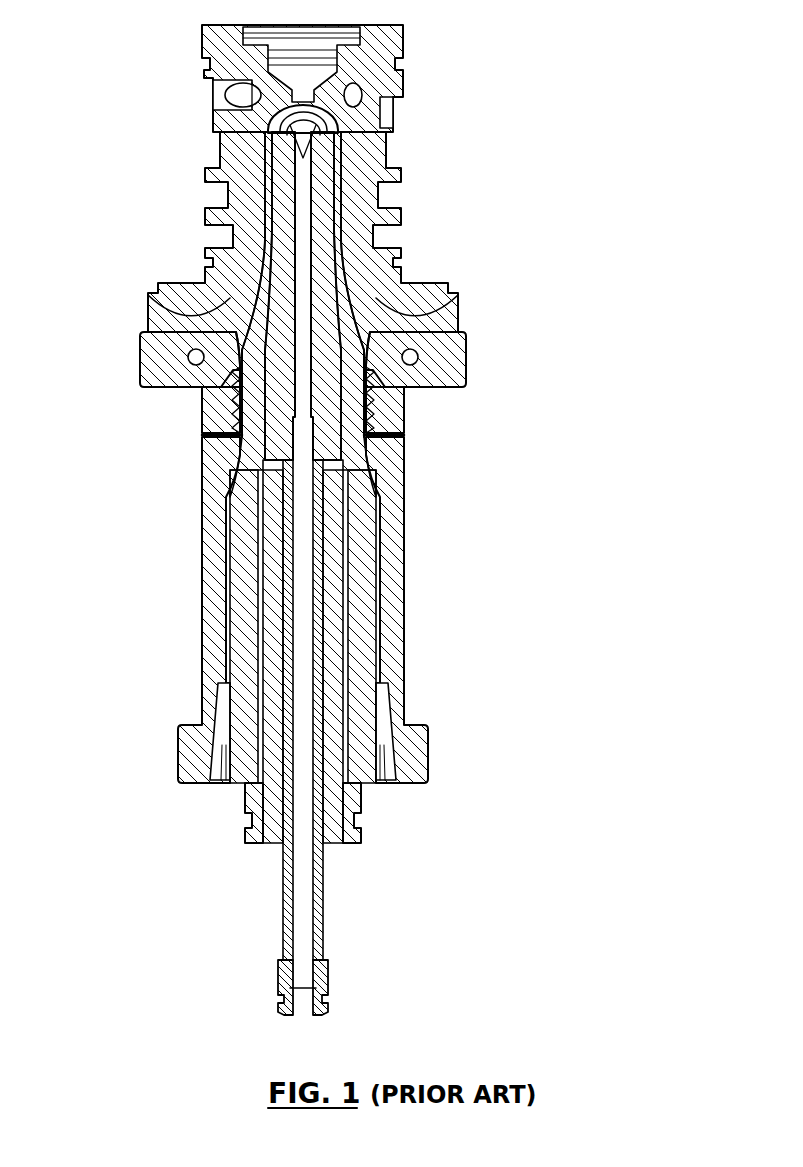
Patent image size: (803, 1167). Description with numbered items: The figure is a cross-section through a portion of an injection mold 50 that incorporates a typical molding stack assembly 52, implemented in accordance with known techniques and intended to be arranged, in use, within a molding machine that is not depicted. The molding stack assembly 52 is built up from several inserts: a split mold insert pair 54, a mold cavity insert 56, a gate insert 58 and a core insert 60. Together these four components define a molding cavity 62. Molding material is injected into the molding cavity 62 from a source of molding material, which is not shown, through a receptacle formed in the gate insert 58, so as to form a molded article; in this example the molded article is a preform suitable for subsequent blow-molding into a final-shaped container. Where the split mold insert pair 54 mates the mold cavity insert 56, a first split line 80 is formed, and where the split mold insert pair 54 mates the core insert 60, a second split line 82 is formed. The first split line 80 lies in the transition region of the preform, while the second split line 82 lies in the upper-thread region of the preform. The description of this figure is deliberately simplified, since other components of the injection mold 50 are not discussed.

The injection mold 50 is at (633, 294).
The molding stack assembly 52 is at (480, 307).
The split mold insert pair 54 is at (155, 401).
The mold cavity insert 56 is at (183, 210).
The gate insert 58 is at (180, 50).
The core insert 60 is at (179, 633).
The molding cavity 62 is at (332, 237).
The first split line 80 is at (226, 301).
The second split line 82 is at (238, 437).